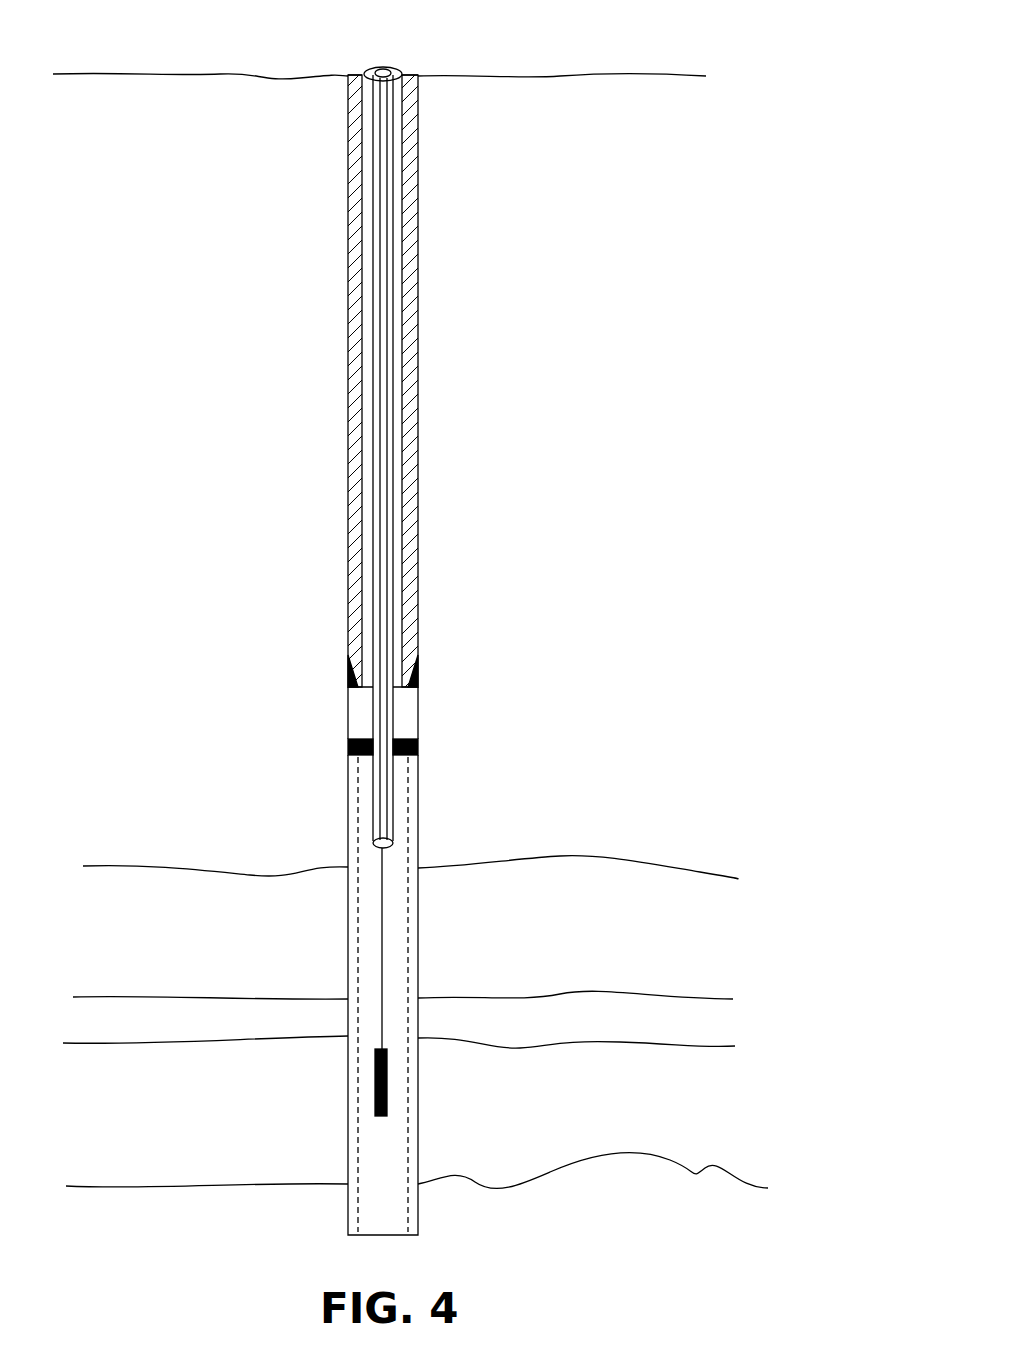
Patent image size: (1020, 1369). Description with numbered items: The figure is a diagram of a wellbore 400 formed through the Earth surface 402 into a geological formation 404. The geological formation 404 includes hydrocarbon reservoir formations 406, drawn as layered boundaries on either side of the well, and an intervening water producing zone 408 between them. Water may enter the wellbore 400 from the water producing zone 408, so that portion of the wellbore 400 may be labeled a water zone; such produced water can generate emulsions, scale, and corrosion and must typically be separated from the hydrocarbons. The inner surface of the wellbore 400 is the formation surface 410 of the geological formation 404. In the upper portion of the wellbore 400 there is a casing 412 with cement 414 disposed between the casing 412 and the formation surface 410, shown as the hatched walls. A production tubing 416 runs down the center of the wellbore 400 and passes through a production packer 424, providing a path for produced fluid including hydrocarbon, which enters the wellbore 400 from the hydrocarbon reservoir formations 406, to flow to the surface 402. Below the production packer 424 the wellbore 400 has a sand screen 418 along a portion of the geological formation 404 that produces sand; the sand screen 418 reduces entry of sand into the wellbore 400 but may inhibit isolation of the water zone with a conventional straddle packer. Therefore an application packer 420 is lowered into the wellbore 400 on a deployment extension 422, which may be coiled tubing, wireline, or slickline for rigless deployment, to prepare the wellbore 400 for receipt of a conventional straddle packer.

The wellbore 400 is at (204, 288).
The Earth surface 402 is at (312, 80).
The geological formation 404 is at (521, 451).
The hydrocarbon reservoir formations 406 is at (275, 897).
The water producing zone 408 is at (212, 1018).
The formation surface 410 is at (410, 713).
The casing 412 is at (355, 100).
The cement 414 is at (410, 327).
The production tubing 416 is at (375, 567).
The sand screen 418 is at (410, 895).
The application packer 420 is at (375, 1095).
The deployment extension 422 is at (381, 210).
The production packer 424 is at (357, 757).